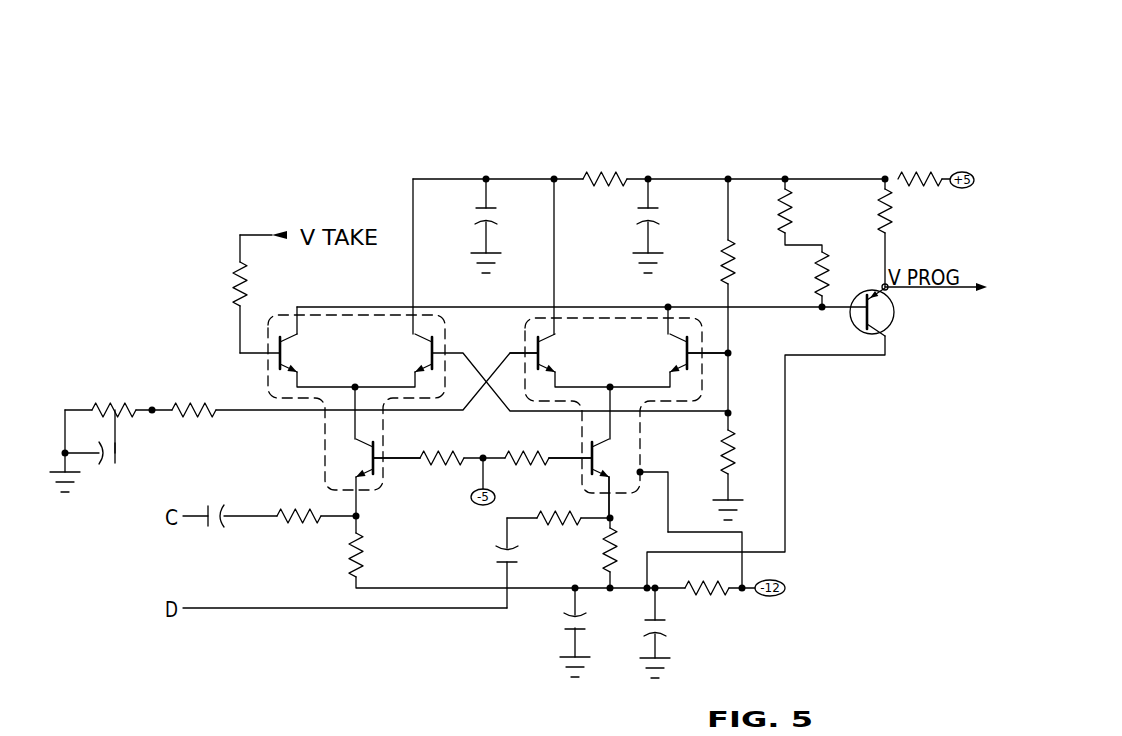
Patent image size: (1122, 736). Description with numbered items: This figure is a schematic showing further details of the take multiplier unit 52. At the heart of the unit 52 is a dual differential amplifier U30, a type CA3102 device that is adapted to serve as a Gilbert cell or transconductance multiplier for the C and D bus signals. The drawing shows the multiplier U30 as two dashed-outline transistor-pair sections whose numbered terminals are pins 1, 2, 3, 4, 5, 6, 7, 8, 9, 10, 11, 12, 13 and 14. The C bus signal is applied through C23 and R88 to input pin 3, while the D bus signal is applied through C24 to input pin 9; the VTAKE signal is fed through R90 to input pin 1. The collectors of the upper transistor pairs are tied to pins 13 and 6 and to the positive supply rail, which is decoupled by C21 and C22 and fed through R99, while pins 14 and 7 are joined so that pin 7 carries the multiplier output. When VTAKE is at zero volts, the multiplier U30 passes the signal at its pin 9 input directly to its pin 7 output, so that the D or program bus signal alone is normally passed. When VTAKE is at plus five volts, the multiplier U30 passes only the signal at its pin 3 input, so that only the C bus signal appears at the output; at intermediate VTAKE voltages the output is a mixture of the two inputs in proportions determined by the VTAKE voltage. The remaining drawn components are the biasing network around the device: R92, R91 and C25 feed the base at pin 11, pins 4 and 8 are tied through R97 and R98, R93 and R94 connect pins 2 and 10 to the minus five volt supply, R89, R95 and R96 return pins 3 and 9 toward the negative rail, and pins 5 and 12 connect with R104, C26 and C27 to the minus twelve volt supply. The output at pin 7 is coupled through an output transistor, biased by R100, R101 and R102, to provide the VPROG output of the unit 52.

The take multiplier unit 52 is at (318, 181).
The dual differential amplifier U30 is at (483, 403).
The resistor R88 is at (305, 510).
The resistor R89 is at (359, 560).
The resistor R90 is at (240, 286).
The resistor R91 is at (197, 405).
The resistor R92 is at (120, 405).
The resistor R93 is at (461, 438).
The resistor R94 is at (551, 438).
The resistor R95 is at (538, 525).
The resistor R96 is at (600, 565).
The resistor R97 is at (759, 304).
The resistor R98 is at (732, 466).
The resistor R99 is at (613, 175).
The resistor R100 is at (790, 226).
The resistor R101 is at (846, 277).
The resistor R102 is at (885, 222).
The resistor R104 is at (701, 595).
The capacitor C21 is at (497, 216).
The capacitor C22 is at (660, 217).
The capacitor C23 is at (225, 520).
The capacitor C24 is at (502, 550).
The capacitor C25 is at (118, 458).
The capacitor C26 is at (560, 626).
The capacitor C27 is at (672, 630).
The input pin 1 is at (252, 329).
The U30 pin 2 is at (396, 447).
The input pin 3 is at (365, 505).
The U30 pin 4 is at (580, 370).
The U30 pin 5 is at (661, 489).
The U30 pin 6 is at (562, 256).
The output pin 7 is at (668, 308).
The U30 pin 8 is at (717, 354).
The input pin 9 is at (619, 501).
The U30 pin 10 is at (570, 447).
The U30 pin 11 is at (522, 342).
The U30 pin 12 is at (705, 560).
The U30 pin 13 is at (424, 256).
The U30 pin 14 is at (296, 308).